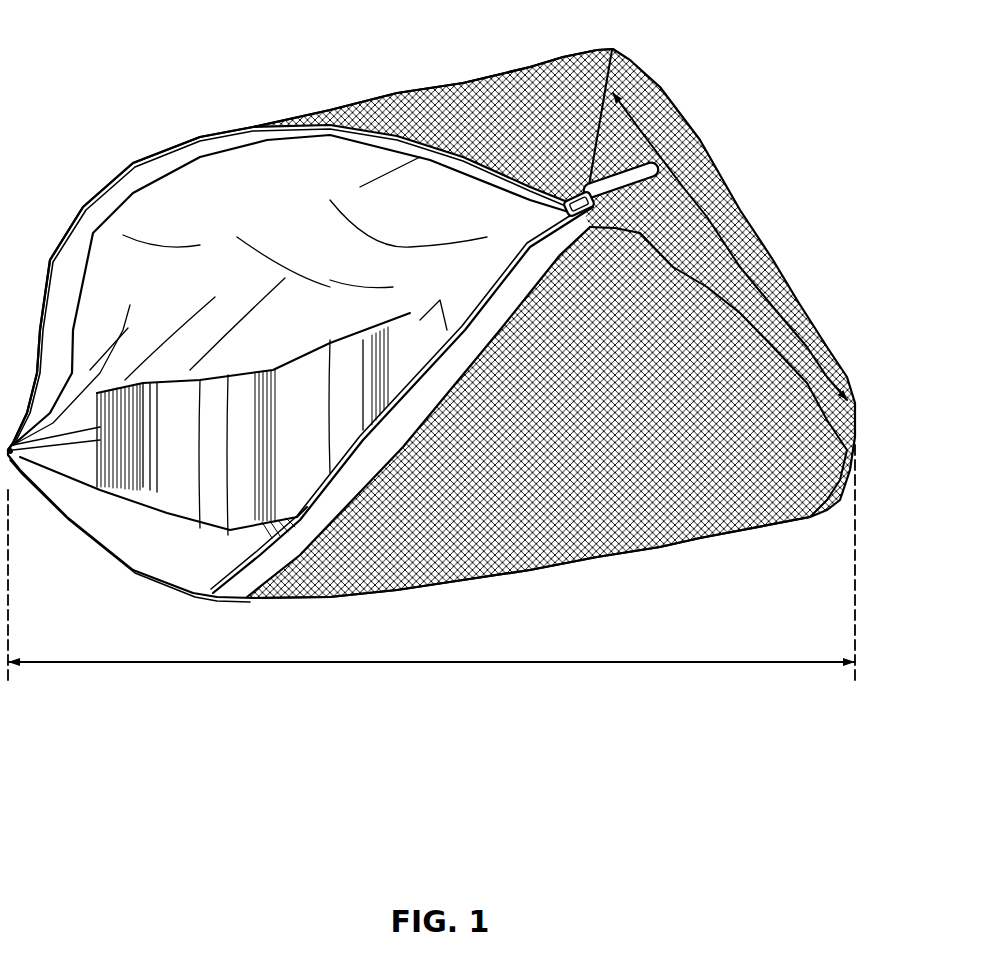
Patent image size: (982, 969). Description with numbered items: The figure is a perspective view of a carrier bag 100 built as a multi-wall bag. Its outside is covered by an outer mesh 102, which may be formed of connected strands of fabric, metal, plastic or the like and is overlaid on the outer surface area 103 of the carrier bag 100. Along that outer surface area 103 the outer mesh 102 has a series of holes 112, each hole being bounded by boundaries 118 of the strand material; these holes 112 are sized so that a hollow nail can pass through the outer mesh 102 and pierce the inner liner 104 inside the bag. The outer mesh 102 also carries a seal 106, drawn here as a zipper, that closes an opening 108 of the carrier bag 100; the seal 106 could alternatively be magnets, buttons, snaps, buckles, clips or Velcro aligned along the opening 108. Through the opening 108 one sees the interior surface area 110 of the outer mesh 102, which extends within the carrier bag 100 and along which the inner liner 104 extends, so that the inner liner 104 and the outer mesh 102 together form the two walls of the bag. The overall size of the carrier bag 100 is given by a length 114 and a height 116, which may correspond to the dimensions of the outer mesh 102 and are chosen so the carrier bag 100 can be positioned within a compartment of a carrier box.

The carrier bag 100 is at (360, 689).
The outer mesh 102 is at (580, 67).
The outer surface area 103 is at (799, 473).
The inner liner 104 is at (308, 203).
The seal 106 is at (612, 244).
The opening 108 is at (134, 142).
The interior surface area 110 is at (229, 240).
The holes 112 is at (797, 414).
The length 114 is at (626, 663).
The height 116 is at (737, 250).
The boundaries 118 is at (612, 50).